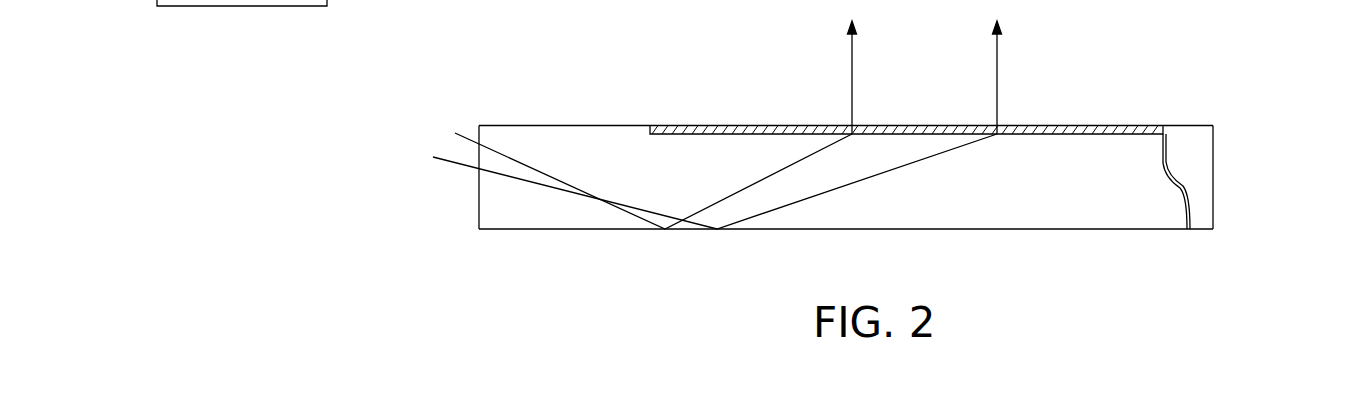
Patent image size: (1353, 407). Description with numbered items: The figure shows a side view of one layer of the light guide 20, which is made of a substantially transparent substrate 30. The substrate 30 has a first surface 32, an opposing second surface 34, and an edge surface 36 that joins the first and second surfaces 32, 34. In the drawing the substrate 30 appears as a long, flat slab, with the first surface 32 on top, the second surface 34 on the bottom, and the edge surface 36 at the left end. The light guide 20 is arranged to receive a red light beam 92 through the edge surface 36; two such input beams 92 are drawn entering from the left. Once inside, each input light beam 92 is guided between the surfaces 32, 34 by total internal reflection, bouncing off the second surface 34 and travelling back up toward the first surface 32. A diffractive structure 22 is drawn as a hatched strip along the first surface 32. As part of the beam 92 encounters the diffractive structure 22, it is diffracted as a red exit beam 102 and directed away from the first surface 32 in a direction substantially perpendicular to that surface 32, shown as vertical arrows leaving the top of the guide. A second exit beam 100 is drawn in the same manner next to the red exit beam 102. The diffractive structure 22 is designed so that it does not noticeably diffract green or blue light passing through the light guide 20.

The light guide 20 is at (1283, 128).
The diffractive structure 22 is at (782, 124).
The substantially transparent substrate 30 is at (1052, 213).
The first surface 32 is at (614, 124).
The second surface 34 is at (635, 230).
The edge surface 36 is at (479, 208).
The red light beam 92 is at (696, 162).
The out-coupled light 100 is at (997, 67).
The red exit beam 102 is at (852, 67).